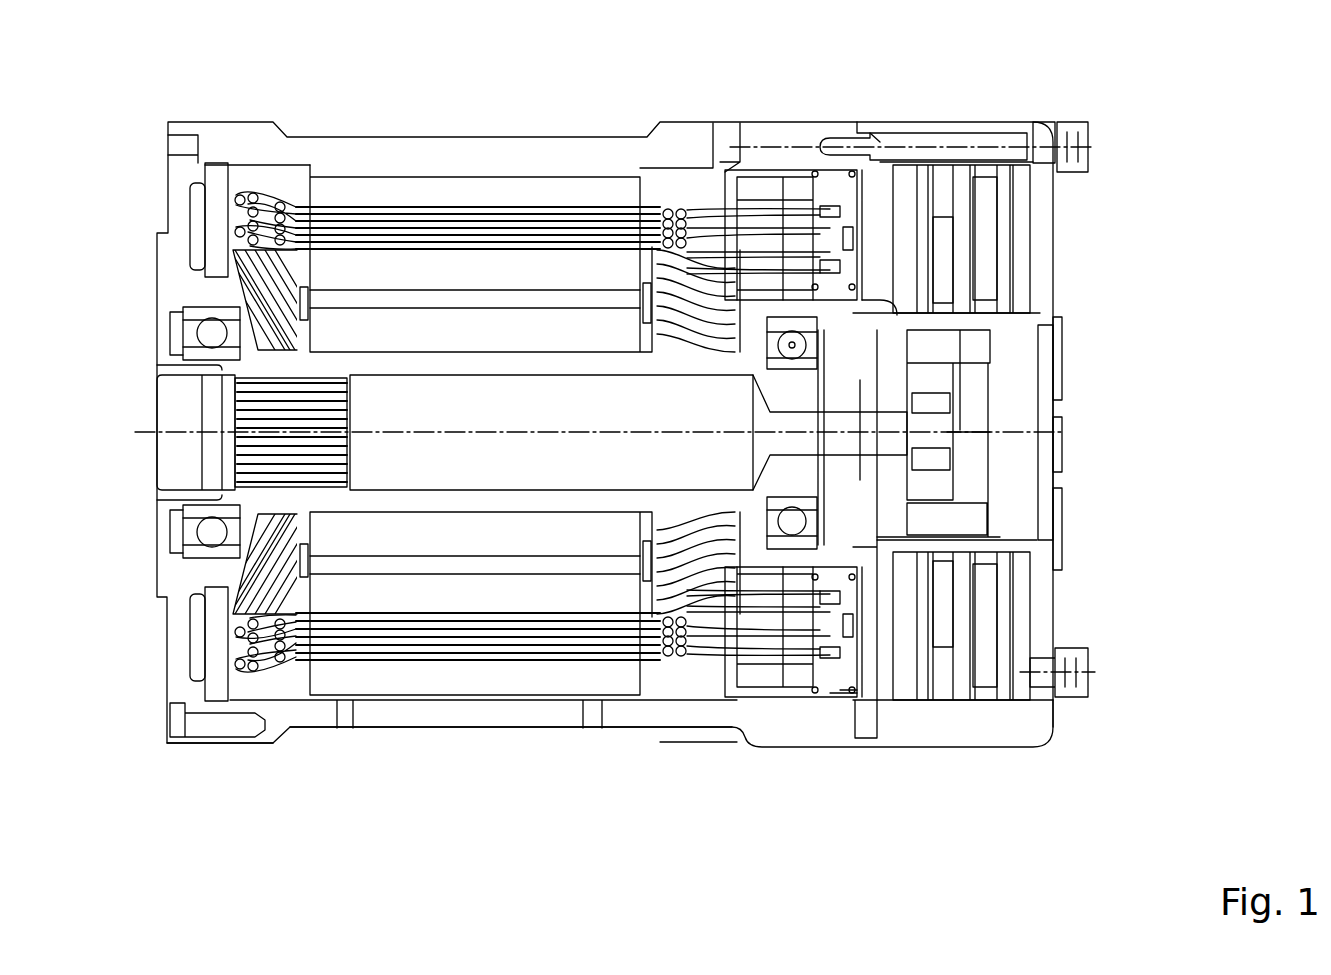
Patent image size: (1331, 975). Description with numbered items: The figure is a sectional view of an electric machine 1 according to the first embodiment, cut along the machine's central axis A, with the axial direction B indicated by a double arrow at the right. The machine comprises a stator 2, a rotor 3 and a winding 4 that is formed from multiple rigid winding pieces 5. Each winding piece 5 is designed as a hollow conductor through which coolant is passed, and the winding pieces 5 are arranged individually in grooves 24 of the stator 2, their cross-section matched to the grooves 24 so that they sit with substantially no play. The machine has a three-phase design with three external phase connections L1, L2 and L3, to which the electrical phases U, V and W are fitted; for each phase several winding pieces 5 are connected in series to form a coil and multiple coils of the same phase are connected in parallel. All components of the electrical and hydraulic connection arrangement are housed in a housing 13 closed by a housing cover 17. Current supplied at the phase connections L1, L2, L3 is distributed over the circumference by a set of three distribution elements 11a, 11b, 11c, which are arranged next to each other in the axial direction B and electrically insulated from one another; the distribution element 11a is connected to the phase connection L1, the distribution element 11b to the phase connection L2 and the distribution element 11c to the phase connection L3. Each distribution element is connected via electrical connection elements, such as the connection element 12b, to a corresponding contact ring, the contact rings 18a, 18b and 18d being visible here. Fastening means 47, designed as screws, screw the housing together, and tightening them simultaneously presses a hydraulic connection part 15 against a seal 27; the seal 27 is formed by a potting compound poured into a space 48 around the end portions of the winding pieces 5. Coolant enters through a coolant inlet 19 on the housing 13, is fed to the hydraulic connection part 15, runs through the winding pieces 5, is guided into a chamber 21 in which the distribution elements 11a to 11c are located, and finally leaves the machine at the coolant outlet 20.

The electric machine 1 is at (438, 743).
The stator 2 is at (360, 673).
The rotor 3 is at (417, 307).
The winding 4 is at (420, 263).
The rigid winding pieces 5 is at (503, 232).
The grooves 24 is at (368, 198).
The contact ring 18d is at (735, 232).
The contact ring 18a is at (808, 177).
The contact ring 18b is at (792, 177).
The coolant inlet 19 is at (1075, 127).
The distribution element 11a is at (990, 204).
The distribution element 11b is at (950, 220).
The distribution element 11c is at (910, 268).
The external phase connection L1 is at (1050, 355).
The external phase connection L2 is at (1063, 447).
The external phase connection L3 is at (1063, 532).
The electrical phase U is at (1078, 387).
The electrical phase V is at (1081, 469).
The electrical phase W is at (1082, 559).
The axis of rotation A is at (1103, 413).
The axial direction B is at (1127, 507).
The housing 13 is at (537, 708).
The space 48 is at (772, 653).
The seal 27 is at (815, 695).
The fastening means 47 is at (823, 728).
The hydraulic connection part 15 is at (847, 672).
The electrical connection element 12b is at (897, 658).
The chamber 21 is at (948, 687).
The housing cover 17 is at (1022, 727).
The coolant outlet 20 is at (1072, 702).